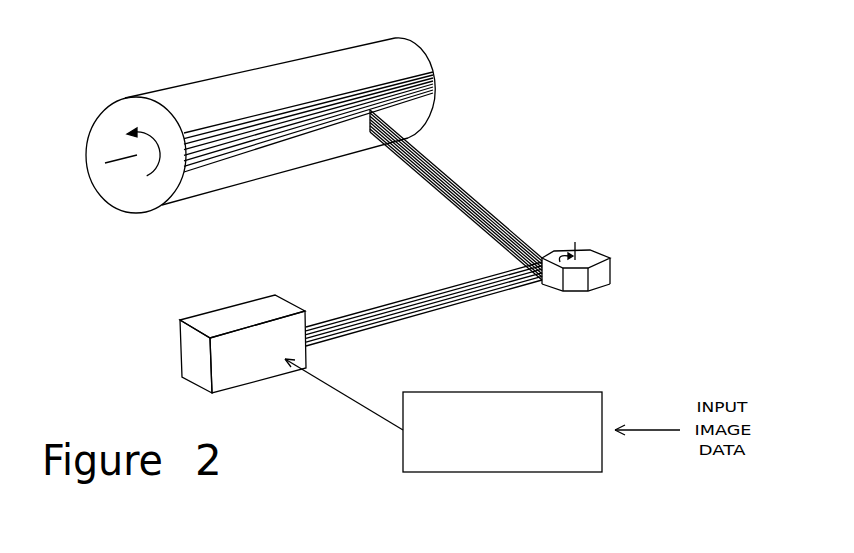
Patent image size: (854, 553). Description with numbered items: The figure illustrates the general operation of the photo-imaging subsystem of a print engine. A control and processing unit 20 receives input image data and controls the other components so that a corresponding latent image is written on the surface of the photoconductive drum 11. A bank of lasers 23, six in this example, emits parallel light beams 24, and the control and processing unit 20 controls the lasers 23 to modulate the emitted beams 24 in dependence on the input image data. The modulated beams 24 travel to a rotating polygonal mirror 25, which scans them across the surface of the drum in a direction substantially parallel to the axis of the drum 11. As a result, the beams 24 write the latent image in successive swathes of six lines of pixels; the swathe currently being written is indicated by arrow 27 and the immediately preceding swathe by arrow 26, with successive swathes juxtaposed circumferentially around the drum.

The photoconductive drum 11 is at (207, 81).
The immediately preceding swathe 26 is at (397, 73).
The swathe currently being written 27 is at (358, 143).
The rotating polygonal mirror 25 is at (598, 258).
The parallel light beams 24 is at (362, 302).
The bank of lasers 23 is at (237, 314).
The control and processing unit 20 is at (503, 392).